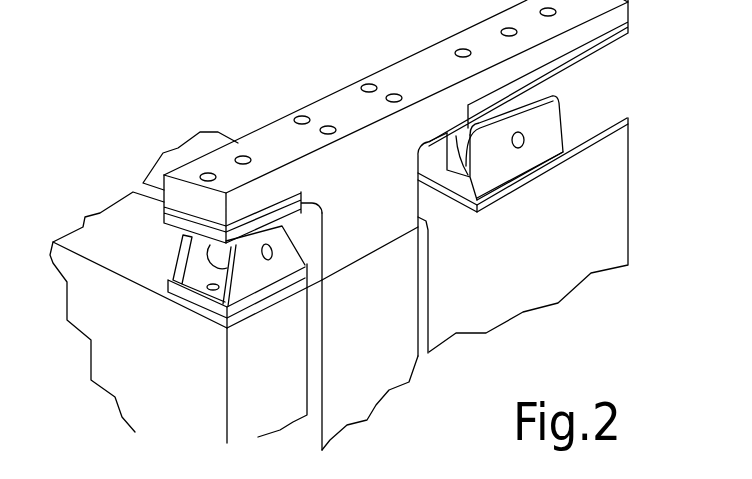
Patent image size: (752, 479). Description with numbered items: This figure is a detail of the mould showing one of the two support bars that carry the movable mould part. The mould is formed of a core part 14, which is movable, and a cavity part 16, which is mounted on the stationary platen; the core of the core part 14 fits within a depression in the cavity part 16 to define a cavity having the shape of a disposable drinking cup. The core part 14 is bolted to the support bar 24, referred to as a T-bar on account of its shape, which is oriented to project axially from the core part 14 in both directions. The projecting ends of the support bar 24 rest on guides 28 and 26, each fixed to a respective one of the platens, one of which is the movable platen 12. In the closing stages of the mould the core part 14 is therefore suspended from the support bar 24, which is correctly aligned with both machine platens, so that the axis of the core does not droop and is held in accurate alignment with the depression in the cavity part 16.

The movable platen 12 is at (243, 376).
The core part 14 is at (375, 358).
The cavity part 16 is at (563, 262).
The support bar 24 is at (345, 107).
The guide 26 is at (573, 113).
The guide 28 is at (164, 246).